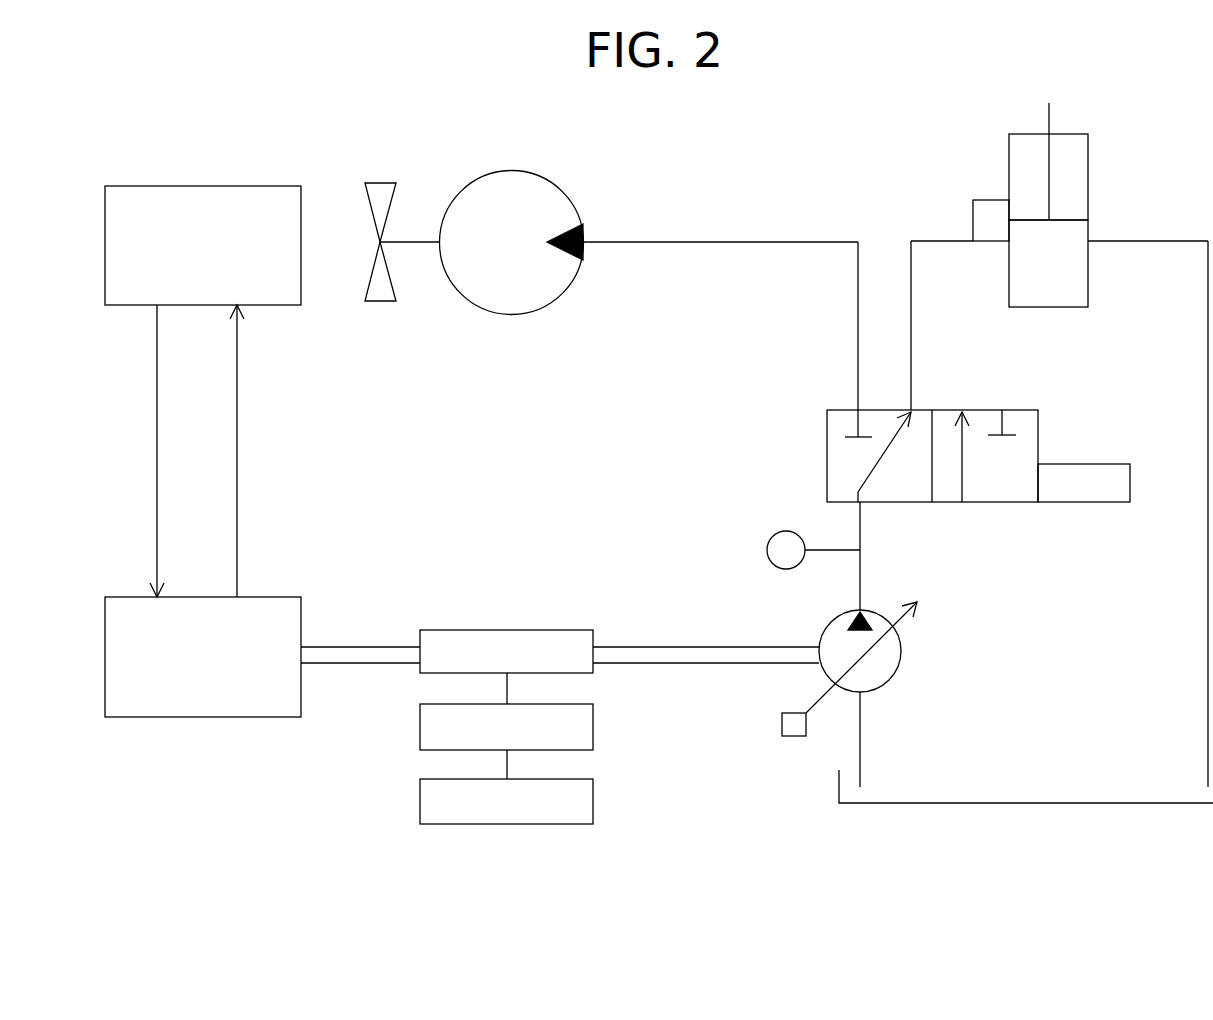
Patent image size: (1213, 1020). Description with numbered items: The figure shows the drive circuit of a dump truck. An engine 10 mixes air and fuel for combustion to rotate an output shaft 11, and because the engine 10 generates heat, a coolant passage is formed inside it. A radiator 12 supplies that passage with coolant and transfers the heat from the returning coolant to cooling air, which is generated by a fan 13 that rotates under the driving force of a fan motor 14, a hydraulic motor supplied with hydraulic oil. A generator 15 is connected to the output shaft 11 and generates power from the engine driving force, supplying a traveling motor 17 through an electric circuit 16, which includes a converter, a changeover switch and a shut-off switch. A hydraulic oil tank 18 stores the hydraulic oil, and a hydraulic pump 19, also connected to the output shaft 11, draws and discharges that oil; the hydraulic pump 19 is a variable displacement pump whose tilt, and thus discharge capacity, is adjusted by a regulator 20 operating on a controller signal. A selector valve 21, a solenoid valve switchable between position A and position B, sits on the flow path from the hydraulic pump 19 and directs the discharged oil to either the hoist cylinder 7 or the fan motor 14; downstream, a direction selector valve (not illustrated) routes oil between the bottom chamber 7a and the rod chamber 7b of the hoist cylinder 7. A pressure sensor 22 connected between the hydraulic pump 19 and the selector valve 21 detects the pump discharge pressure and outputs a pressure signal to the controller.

The hoist cylinder 7 is at (1059, 405).
The bottom chamber 7a is at (1082, 286).
The rod chamber 7b is at (1085, 185).
The engine 10 is at (267, 597).
The output shaft 11 is at (358, 648).
The radiator 12 is at (233, 186).
The fan 13 is at (388, 183).
The fan motor 14 is at (560, 187).
The generator 15 is at (593, 630).
The electric circuit 16 is at (593, 728).
The traveling motor 17 is at (593, 802).
The hydraulic oil tank 18 is at (1031, 803).
The hydraulic pump 19 is at (903, 650).
The regulator 20 is at (798, 737).
The selector valve 21 is at (1053, 415).
The pressure sensor 22 is at (777, 532).